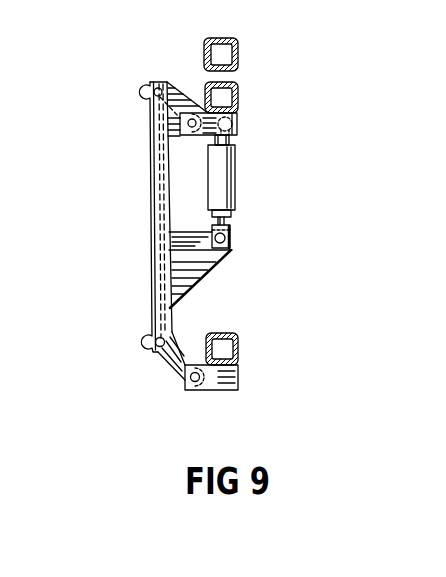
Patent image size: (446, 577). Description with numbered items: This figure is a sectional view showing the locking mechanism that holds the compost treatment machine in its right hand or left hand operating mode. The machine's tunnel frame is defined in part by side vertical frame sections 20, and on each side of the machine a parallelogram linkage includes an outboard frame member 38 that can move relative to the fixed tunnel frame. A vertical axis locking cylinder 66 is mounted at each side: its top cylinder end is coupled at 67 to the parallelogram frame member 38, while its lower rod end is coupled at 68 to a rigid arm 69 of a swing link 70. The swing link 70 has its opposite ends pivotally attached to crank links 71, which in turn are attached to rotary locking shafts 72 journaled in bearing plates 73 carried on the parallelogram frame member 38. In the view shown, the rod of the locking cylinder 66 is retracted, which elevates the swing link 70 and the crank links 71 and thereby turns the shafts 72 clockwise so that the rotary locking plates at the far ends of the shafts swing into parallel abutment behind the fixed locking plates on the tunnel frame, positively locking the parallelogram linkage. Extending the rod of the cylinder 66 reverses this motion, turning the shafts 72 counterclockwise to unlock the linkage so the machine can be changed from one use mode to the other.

The side vertical frame section 20 is at (239, 58).
The outboard frame member 38 is at (237, 107).
The locking cylinder 66 is at (232, 186).
The top cylinder end coupling 67 is at (238, 130).
The lower rod end coupling 68 is at (232, 238).
The rigid arm 69 is at (194, 243).
The swing link 70 is at (162, 208).
The crank link 71 is at (182, 112).
The rotary locking shaft 72 is at (187, 125).
The bearing plate 73 is at (182, 140).